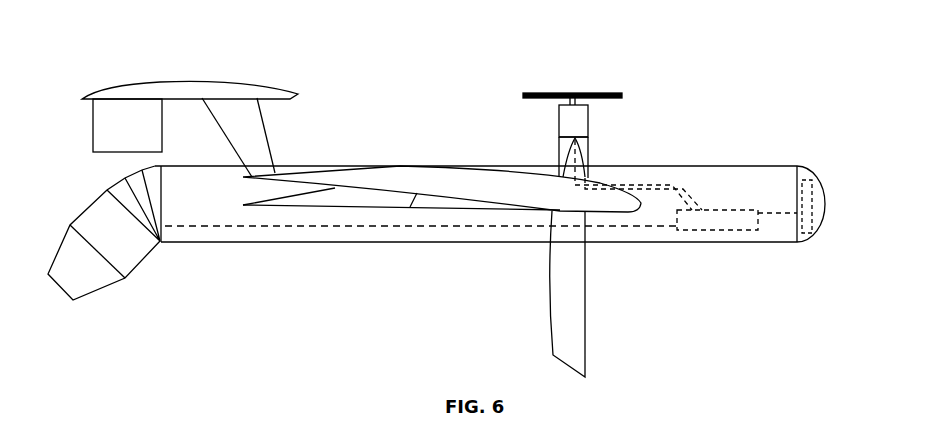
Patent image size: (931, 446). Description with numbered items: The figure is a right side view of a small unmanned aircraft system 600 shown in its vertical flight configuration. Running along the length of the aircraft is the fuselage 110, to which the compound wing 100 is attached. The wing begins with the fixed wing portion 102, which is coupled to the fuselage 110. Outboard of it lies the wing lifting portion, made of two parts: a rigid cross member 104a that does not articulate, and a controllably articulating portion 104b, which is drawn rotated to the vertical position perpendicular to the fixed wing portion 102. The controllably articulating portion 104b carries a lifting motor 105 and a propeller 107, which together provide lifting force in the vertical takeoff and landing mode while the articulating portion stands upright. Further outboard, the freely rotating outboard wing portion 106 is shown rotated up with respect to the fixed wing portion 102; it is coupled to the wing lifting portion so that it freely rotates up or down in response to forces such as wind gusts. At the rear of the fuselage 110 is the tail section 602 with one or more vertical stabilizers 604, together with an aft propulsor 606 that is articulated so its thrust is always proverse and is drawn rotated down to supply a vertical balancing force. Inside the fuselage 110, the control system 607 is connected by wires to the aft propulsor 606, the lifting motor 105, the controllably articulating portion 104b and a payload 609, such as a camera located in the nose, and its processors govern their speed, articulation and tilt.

The small unmanned aircraft system 600 is at (762, 114).
The compound wing 100 is at (393, 164).
The fuselage 110 is at (674, 162).
The payload 609 is at (804, 170).
The fixed wing portion 102 is at (430, 209).
The freely rotating outboard wing portion 106 is at (476, 178).
The rigid cross member 104a is at (346, 206).
The controllably articulating portion 104b is at (572, 327).
The lifting motor 105 is at (552, 121).
The propeller 107 is at (632, 88).
The control system 607 is at (737, 219).
The aft propulsor 606 is at (152, 266).
The tail section 602 is at (198, 83).
The vertical stabilizer 604 is at (110, 156).